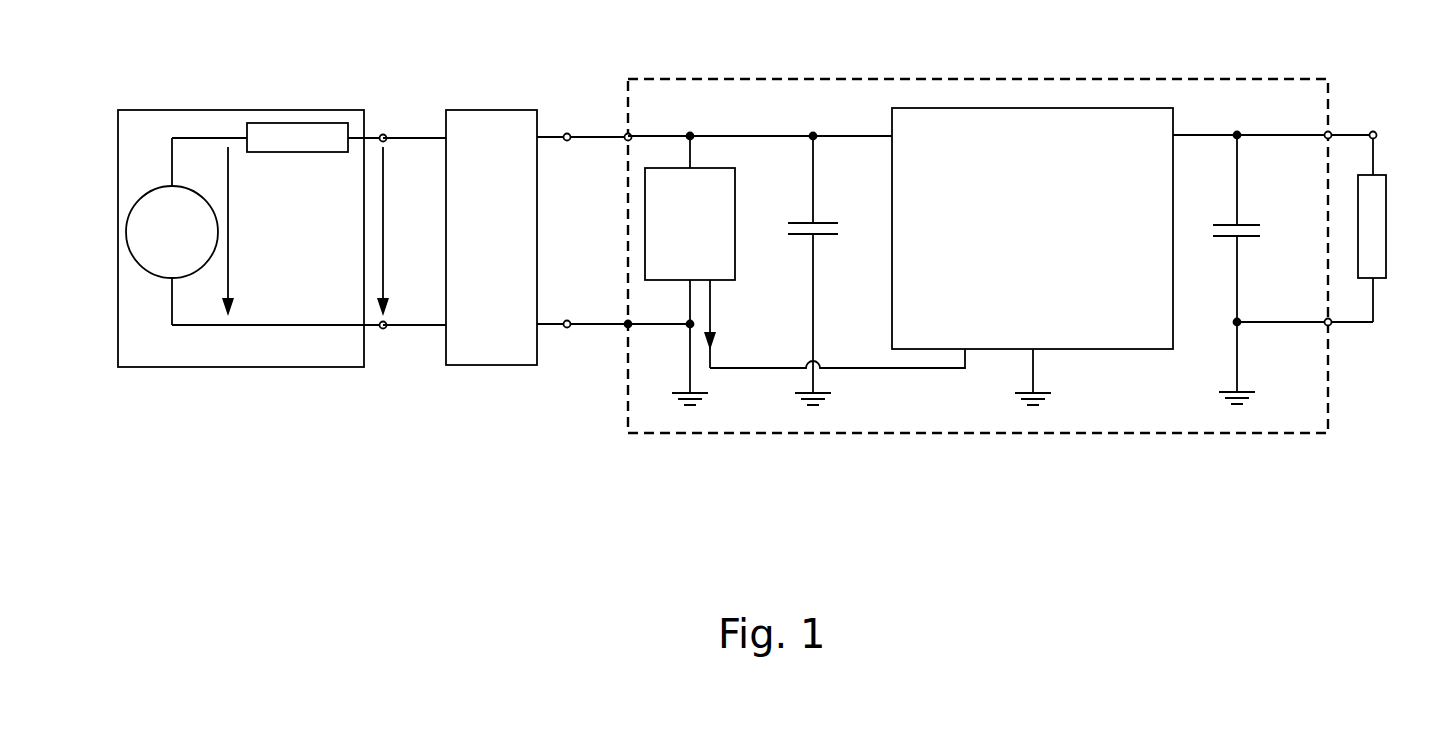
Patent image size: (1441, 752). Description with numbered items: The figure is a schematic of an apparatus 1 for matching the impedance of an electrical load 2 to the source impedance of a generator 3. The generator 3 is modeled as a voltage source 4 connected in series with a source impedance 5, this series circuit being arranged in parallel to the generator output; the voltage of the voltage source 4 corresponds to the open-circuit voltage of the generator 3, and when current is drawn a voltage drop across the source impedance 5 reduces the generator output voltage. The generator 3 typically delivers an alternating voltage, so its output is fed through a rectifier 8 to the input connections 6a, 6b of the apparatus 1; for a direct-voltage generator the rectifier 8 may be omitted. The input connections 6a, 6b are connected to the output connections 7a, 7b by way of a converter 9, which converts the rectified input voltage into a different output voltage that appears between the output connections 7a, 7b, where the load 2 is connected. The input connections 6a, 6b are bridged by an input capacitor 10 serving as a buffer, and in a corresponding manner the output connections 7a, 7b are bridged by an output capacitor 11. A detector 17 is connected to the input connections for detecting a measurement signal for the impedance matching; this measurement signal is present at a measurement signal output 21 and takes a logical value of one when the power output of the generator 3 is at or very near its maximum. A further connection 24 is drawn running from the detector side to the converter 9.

The apparatus 1 is at (538, 575).
The electrical load 2 is at (1380, 225).
The generator 3 is at (240, 358).
The voltage source 4 is at (155, 200).
The source impedance 5 is at (288, 134).
The input connection 6a is at (627, 132).
The input connection 6b is at (627, 327).
The output connection 7a is at (1330, 131).
The output connection 7b is at (1330, 326).
The rectifier 8 is at (505, 233).
The converter 9 is at (1032, 256).
The input capacitor 10 is at (790, 200).
The output capacitor 11 is at (1213, 208).
The detector 17 is at (690, 224).
The measurement signal output 21 is at (713, 282).
The control connection 24 is at (968, 352).